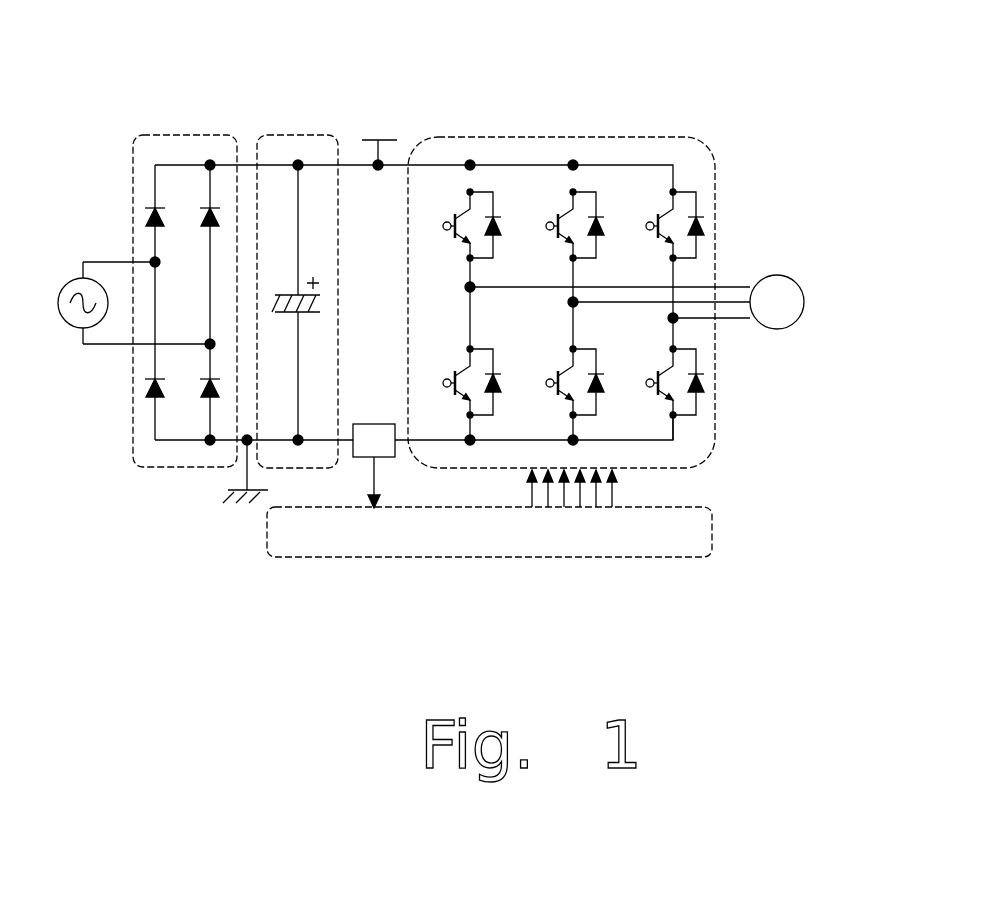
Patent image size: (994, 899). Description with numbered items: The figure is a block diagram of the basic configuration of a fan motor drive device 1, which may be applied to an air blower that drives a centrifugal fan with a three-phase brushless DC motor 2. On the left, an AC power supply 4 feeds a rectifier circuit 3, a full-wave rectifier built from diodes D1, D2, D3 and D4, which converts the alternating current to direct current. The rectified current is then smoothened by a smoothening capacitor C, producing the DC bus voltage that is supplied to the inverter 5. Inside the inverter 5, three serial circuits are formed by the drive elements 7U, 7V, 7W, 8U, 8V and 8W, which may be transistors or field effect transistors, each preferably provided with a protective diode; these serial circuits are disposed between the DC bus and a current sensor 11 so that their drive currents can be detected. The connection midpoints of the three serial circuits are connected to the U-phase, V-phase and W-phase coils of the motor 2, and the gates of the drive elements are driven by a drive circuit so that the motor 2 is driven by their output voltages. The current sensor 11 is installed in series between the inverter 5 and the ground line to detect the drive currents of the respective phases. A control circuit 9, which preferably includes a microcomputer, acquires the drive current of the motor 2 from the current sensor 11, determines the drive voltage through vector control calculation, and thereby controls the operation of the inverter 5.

The fan motor drive device 1 is at (720, 91).
The three-phase brushless DC motor 2 is at (793, 283).
The rectifier circuit 3 is at (205, 135).
The AC power supply 4 is at (64, 322).
The inverter 5 is at (617, 137).
The drive element 7U is at (453, 238).
The drive element 7V is at (556, 238).
The drive element 7W is at (656, 238).
The drive element 8U is at (453, 372).
The drive element 8V is at (556, 372).
The drive element 8W is at (656, 372).
The control circuit 9 is at (712, 532).
The current sensor 11 is at (369, 424).
The smoothening capacitor C is at (309, 135).
The diode D1 is at (148, 217).
The diode D2 is at (205, 228).
The diode D3 is at (148, 388).
The diode D4 is at (205, 400).